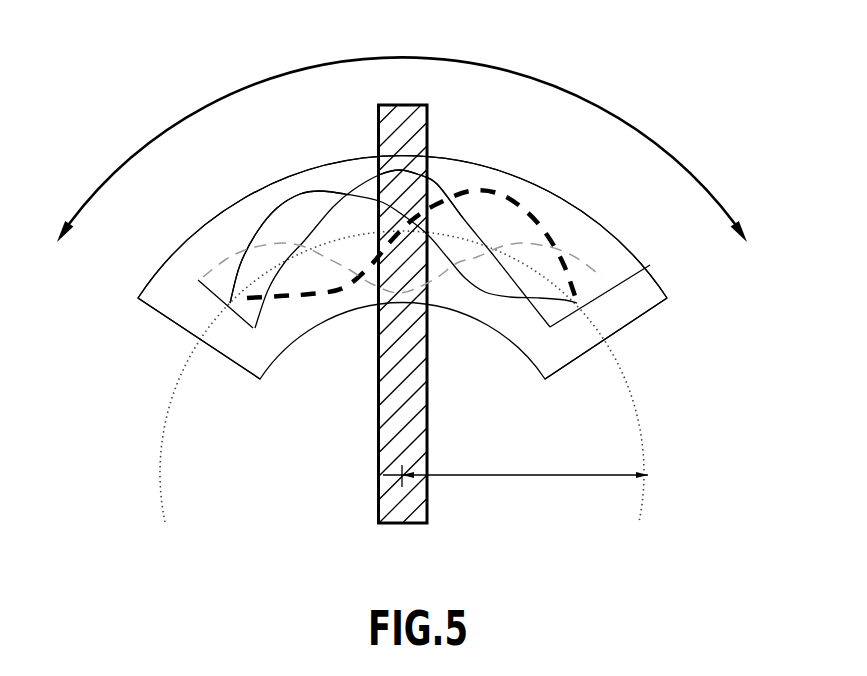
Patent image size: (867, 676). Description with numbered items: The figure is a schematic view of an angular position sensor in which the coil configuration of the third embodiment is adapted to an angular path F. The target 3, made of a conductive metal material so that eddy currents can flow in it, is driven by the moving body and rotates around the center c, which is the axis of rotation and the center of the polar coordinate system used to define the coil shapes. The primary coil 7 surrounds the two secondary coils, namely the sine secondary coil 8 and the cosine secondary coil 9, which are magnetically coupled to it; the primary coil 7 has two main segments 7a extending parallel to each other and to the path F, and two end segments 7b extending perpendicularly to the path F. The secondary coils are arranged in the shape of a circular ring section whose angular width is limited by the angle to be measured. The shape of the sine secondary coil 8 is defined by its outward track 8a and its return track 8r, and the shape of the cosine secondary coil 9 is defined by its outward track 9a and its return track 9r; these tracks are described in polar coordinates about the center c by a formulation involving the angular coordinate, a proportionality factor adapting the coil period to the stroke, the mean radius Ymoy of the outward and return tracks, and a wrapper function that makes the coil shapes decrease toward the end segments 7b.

The path F is at (400, 58).
The target 3 is at (388, 393).
The center c is at (400, 477).
The mean radius Ymoy is at (404, 376).
The primary coil 7 is at (652, 262).
The main segments 7a is at (360, 160).
The end segments 7b is at (163, 316).
The sine secondary coil 8 is at (248, 232).
The outward track 8a is at (280, 208).
The return track 8r is at (503, 192).
The cosine secondary coil 9 is at (348, 181).
The outward track 9a is at (433, 174).
The return track 9r is at (580, 257).